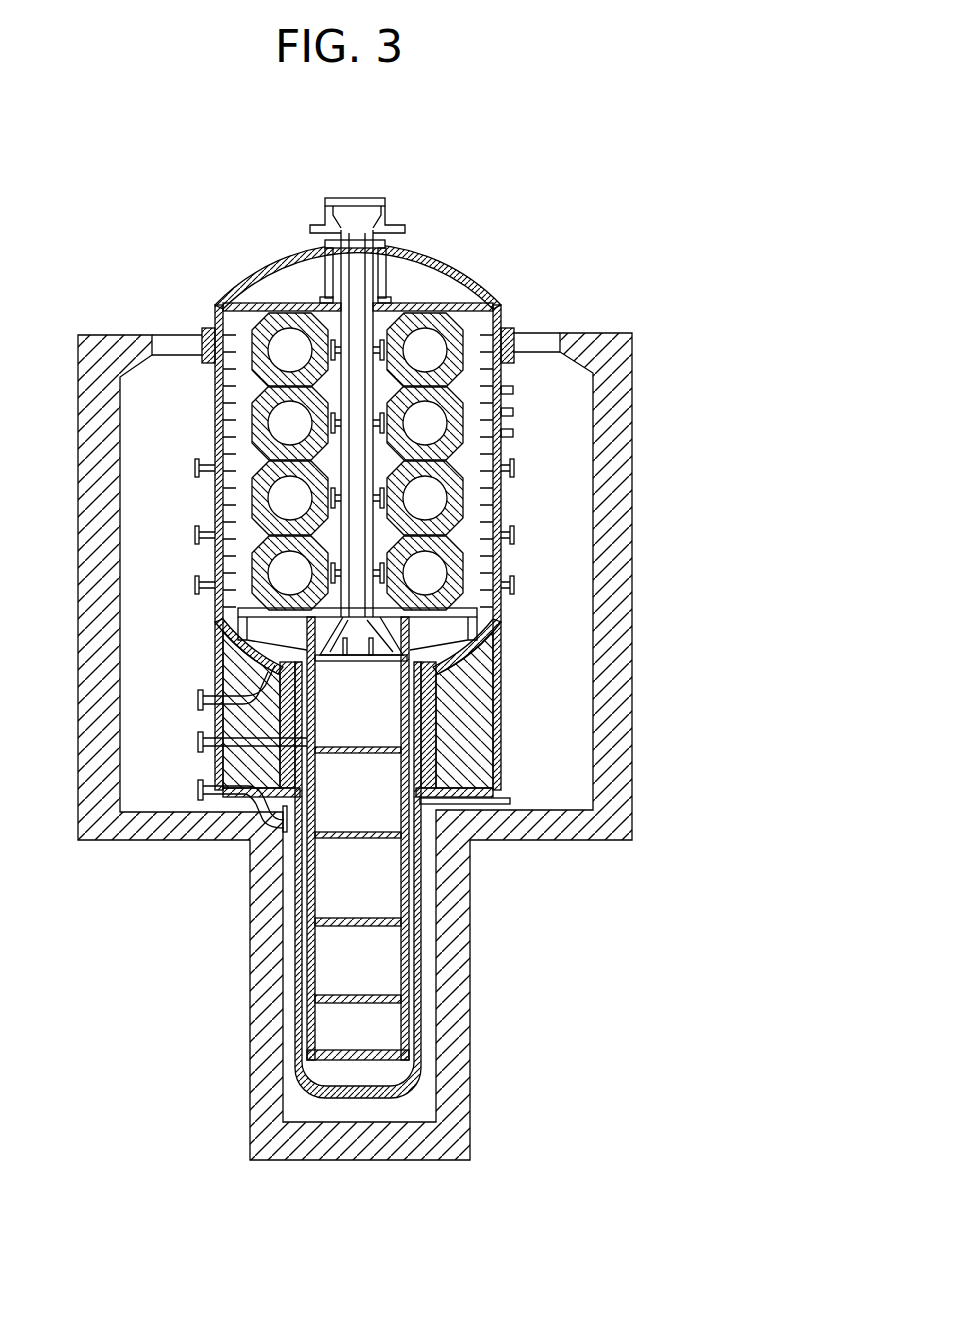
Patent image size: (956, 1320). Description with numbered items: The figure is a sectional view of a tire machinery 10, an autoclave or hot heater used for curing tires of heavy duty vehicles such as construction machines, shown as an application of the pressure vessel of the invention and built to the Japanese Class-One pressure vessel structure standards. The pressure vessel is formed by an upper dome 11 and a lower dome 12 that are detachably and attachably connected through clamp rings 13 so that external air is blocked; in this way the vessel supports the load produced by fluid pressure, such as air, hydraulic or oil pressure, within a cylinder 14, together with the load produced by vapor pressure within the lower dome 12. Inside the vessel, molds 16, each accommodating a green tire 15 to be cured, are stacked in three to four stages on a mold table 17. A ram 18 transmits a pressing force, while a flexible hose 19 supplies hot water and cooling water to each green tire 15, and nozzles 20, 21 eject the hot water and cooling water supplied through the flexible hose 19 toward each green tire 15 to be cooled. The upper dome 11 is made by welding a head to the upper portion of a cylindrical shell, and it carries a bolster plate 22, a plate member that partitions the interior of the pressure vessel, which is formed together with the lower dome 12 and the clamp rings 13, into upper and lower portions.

The tire machinery 10 is at (590, 185).
The upper dome 11 is at (455, 270).
The lower dome 12 is at (497, 628).
The clamp rings 13 is at (514, 330).
The cylinder 14 is at (395, 1096).
The green tire 15 is at (432, 353).
The molds 16 is at (440, 318).
The mold table 17 is at (262, 630).
The ram 18 is at (385, 880).
The flexible hose 19 is at (373, 285).
The nozzle 20 is at (516, 466).
The nozzle 21 is at (516, 582).
The bolster plate 22 is at (247, 303).